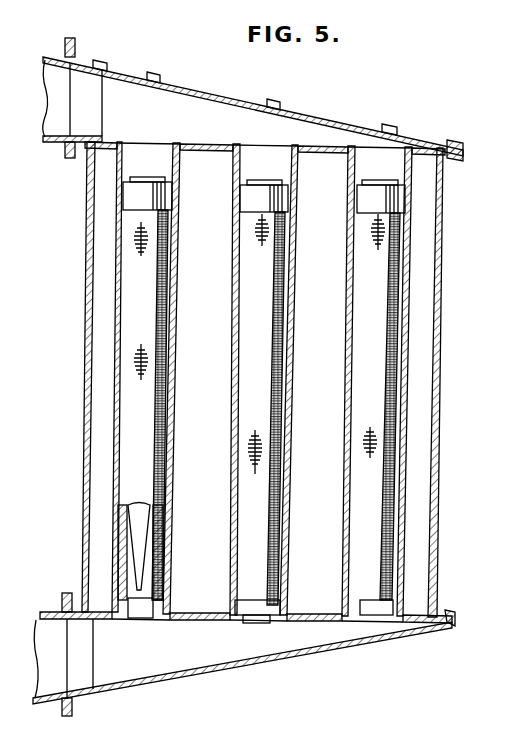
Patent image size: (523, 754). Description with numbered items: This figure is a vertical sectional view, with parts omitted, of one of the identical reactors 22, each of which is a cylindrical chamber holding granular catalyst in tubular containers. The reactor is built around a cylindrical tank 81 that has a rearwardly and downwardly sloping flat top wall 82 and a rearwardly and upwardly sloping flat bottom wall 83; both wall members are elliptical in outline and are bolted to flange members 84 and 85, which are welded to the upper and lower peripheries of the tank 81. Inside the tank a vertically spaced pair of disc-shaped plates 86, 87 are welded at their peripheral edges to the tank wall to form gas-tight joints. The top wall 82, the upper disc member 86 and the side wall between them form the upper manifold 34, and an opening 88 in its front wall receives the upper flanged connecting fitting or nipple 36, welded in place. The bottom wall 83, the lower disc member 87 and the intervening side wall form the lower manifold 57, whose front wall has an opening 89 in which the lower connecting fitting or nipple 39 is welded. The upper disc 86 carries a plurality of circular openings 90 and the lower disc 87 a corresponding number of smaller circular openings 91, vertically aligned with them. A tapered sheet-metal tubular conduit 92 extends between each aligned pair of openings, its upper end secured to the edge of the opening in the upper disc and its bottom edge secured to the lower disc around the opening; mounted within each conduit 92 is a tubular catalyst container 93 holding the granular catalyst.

The reactor 22 is at (458, 350).
The upper manifold 34 is at (170, 92).
The upper connecting fitting or nipple 36 is at (86, 58).
The lower connecting fitting or nipple 39 is at (75, 708).
The lower wall 57 is at (184, 676).
The cylindrical tank 81 is at (442, 415).
The top wall 82 is at (290, 108).
The bottom wall 83 is at (272, 665).
The flange member 84 is at (458, 165).
The flange member 85 is at (446, 616).
The upper disc-shaped plate 86 is at (200, 147).
The lower disc-shaped plate 87 is at (186, 613).
The opening 88 is at (86, 156).
The opening 89 is at (72, 595).
The circular openings 90 is at (183, 147).
The circular openings 91 is at (147, 620).
The tapered tubular conduit 92 is at (170, 486).
The tubular catalyst container 93 is at (168, 355).